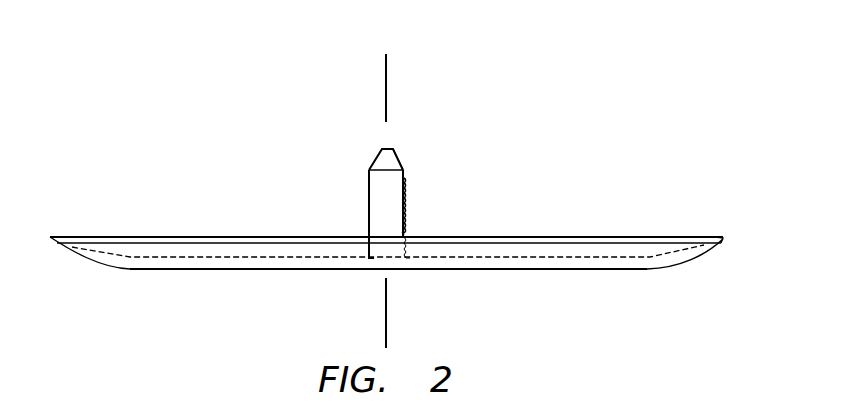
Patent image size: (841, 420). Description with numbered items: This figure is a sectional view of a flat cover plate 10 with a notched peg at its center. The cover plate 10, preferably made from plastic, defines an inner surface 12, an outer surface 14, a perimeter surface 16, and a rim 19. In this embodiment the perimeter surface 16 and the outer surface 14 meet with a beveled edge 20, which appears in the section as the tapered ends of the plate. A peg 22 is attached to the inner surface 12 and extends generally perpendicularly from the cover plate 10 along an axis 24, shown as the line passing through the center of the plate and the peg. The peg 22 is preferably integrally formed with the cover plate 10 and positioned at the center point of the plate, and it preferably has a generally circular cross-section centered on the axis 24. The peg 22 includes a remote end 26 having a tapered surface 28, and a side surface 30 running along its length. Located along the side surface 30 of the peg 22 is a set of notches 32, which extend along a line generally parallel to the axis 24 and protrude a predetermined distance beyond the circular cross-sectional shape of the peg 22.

The cover plate 10 is at (611, 149).
The inner surface 12 is at (178, 256).
The outer surface 14 is at (586, 271).
The perimeter surface 16 is at (724, 241).
The rim 19 is at (722, 239).
The beveled edge 20 is at (697, 262).
The peg 22 is at (372, 209).
The axis 24 is at (386, 87).
The remote end 26 is at (387, 150).
The tapered surface 28 is at (399, 157).
The side surface 30 is at (369, 176).
The notches 32 is at (407, 206).